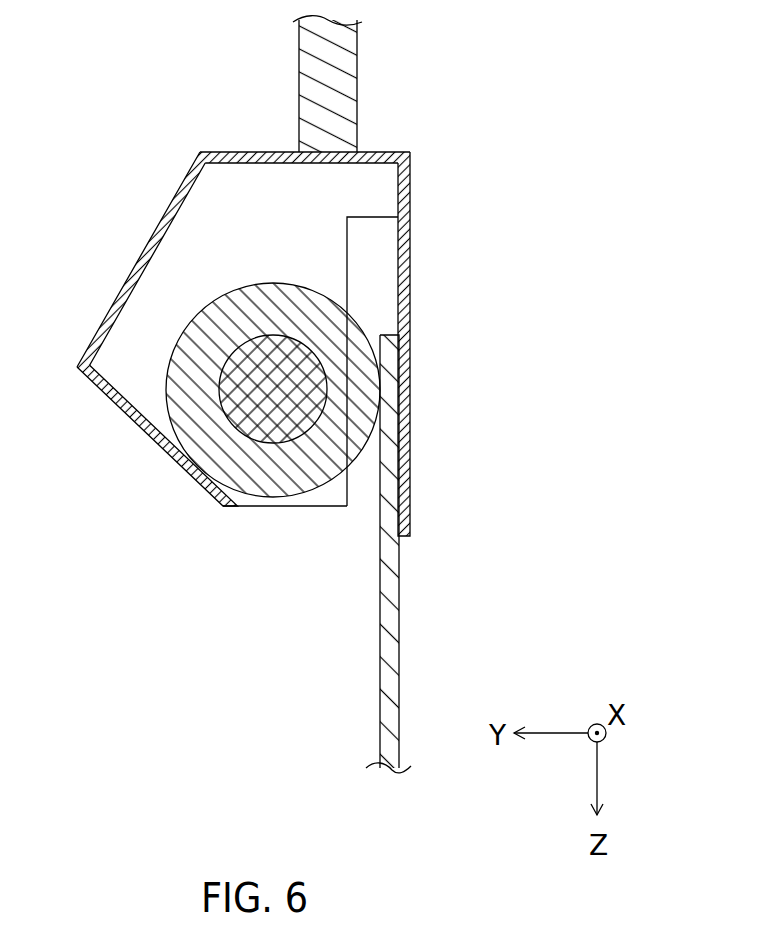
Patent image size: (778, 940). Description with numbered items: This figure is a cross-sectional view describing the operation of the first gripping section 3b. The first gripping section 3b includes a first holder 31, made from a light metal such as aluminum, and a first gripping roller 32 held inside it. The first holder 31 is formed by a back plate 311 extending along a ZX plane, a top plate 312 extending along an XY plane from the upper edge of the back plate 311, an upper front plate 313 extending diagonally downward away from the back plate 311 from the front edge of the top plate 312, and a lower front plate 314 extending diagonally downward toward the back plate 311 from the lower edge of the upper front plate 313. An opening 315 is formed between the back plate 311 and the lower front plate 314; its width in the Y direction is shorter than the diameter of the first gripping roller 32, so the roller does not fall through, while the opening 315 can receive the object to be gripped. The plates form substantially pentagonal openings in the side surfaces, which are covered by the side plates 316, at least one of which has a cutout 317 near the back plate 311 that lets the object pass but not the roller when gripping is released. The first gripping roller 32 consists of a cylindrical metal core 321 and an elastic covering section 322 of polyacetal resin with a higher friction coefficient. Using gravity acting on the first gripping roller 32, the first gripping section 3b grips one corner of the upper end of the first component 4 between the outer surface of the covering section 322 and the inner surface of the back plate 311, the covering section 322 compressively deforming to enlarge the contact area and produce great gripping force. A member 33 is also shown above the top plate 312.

The first gripping section 3b is at (297, 303).
The first holder 31 is at (279, 339).
The back plate 311 is at (408, 270).
The top plate 312 is at (392, 150).
The upper front plate 313 is at (128, 278).
The lower front plate 314 is at (118, 405).
The opening 315 is at (269, 517).
The side plate 316 is at (228, 185).
The cutout 317 is at (383, 232).
The first gripping roller 32 is at (247, 337).
The core 321 is at (272, 388).
The covering section 322 is at (237, 318).
The support rod 33 is at (300, 87).
The first component 4 is at (380, 707).